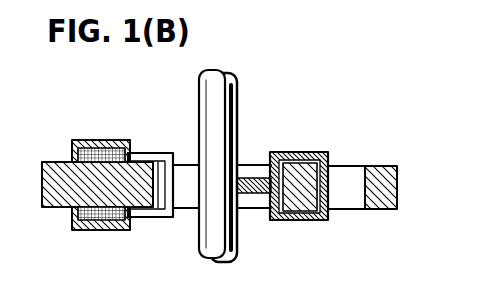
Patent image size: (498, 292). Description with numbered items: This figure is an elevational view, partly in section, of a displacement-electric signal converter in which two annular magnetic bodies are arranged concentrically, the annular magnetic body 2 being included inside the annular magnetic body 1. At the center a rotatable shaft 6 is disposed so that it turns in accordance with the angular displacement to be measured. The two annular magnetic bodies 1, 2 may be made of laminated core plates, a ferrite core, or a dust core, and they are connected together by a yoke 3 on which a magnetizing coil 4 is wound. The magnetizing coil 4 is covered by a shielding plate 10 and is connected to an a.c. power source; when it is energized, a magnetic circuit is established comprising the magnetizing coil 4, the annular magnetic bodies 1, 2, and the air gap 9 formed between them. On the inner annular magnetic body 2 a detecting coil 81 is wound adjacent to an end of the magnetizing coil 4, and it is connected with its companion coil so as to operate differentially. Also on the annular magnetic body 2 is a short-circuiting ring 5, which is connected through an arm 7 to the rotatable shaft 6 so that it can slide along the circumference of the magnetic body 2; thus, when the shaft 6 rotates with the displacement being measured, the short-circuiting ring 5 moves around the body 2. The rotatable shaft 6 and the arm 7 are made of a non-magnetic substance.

The annular magnetic body 1 is at (398, 184).
The annular magnetic body 2 is at (302, 211).
The yoke 3 is at (72, 217).
The magnetizing coil 4 is at (93, 231).
The short-circuiting ring 5 is at (305, 152).
The rotatable shaft 6 is at (238, 103).
The arm 7 is at (247, 178).
The air gap 9 is at (346, 205).
The shielding plate 10 is at (93, 140).
The detecting coil 81 is at (160, 153).